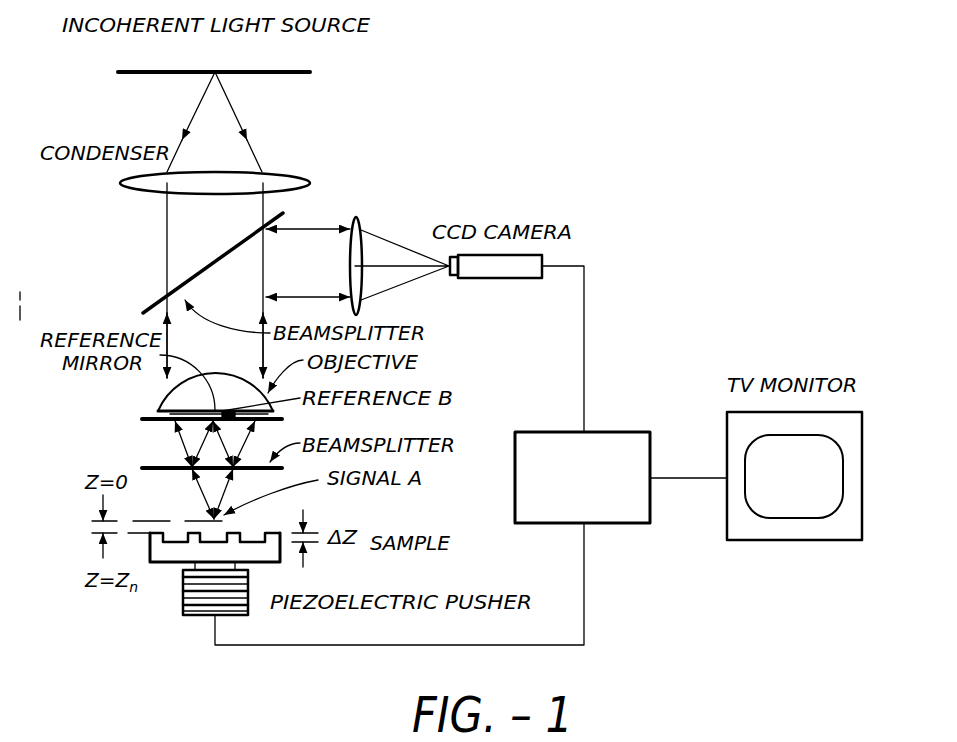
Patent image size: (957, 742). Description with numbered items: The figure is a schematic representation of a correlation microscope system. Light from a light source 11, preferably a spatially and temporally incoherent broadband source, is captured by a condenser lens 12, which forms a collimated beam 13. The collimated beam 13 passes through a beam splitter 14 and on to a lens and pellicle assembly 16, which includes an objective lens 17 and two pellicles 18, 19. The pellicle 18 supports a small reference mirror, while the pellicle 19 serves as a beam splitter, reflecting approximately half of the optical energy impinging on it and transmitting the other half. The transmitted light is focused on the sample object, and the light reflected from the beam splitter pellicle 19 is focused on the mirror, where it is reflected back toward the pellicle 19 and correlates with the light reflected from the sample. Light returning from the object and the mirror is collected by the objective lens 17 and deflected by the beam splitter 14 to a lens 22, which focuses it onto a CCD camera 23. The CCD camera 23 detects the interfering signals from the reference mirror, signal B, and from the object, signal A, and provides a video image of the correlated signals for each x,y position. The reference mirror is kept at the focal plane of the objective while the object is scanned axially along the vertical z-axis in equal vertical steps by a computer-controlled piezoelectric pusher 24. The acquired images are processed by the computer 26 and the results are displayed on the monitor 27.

The light source 11 is at (137, 70).
The condenser lens 12 is at (145, 195).
The collimated beam 13 is at (167, 250).
The beam splitter 14 is at (190, 280).
The lens and pellicle assembly 16 is at (182, 446).
The objective lens 17 is at (163, 402).
The pellicle 18 is at (148, 421).
The pellicle 19 is at (167, 470).
The lens 22 is at (360, 220).
The CCD camera 23 is at (478, 280).
The piezoelectric pusher 24 is at (195, 618).
The computer 26 is at (608, 432).
The monitor 27 is at (772, 540).